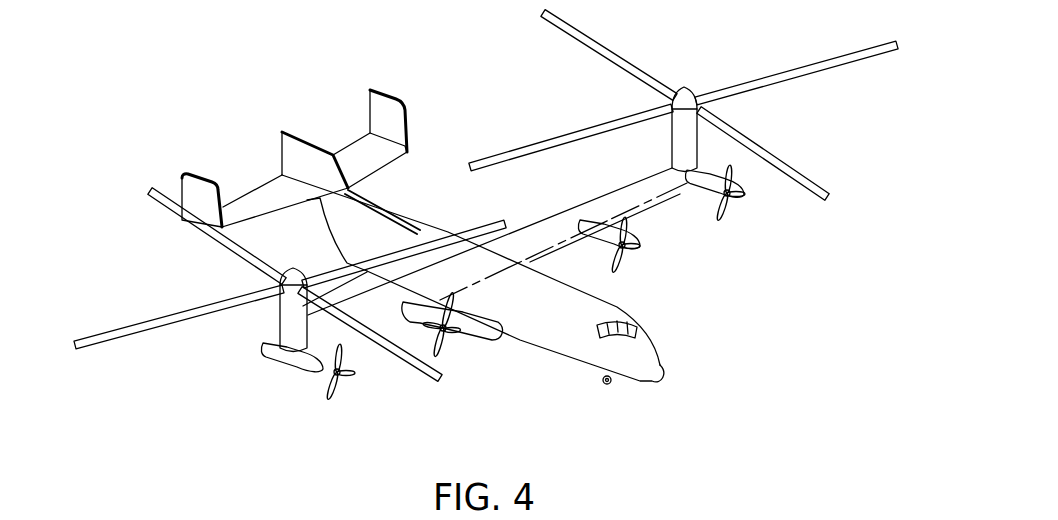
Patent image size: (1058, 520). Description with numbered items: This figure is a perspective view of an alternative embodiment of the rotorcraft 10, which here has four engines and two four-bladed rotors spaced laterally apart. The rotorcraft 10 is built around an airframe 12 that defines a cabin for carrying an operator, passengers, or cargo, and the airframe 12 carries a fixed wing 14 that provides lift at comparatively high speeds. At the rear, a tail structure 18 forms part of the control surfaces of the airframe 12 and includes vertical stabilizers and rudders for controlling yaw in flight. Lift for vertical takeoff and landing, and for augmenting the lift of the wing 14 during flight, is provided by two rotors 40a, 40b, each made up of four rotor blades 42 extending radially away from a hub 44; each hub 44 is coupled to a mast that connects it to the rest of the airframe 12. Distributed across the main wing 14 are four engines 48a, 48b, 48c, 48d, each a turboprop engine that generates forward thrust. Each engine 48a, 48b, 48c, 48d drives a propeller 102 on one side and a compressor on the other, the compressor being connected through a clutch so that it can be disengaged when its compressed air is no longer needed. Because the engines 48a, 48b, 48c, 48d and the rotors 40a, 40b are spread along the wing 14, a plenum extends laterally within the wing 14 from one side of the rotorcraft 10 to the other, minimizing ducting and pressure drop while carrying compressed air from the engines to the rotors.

The rotorcraft 10 is at (727, 375).
The airframe 12 is at (578, 362).
The wing 14 is at (547, 216).
The tail structure 18 is at (299, 113).
The rotor 40a is at (270, 307).
The rotor 40b is at (758, 113).
The rotor blade 42 is at (597, 43).
The hub 44 is at (683, 87).
The engine 48a is at (306, 386).
The engine 48b is at (422, 346).
The engine 48c is at (591, 260).
The engine 48d is at (704, 210).
The propeller 102 is at (351, 391).